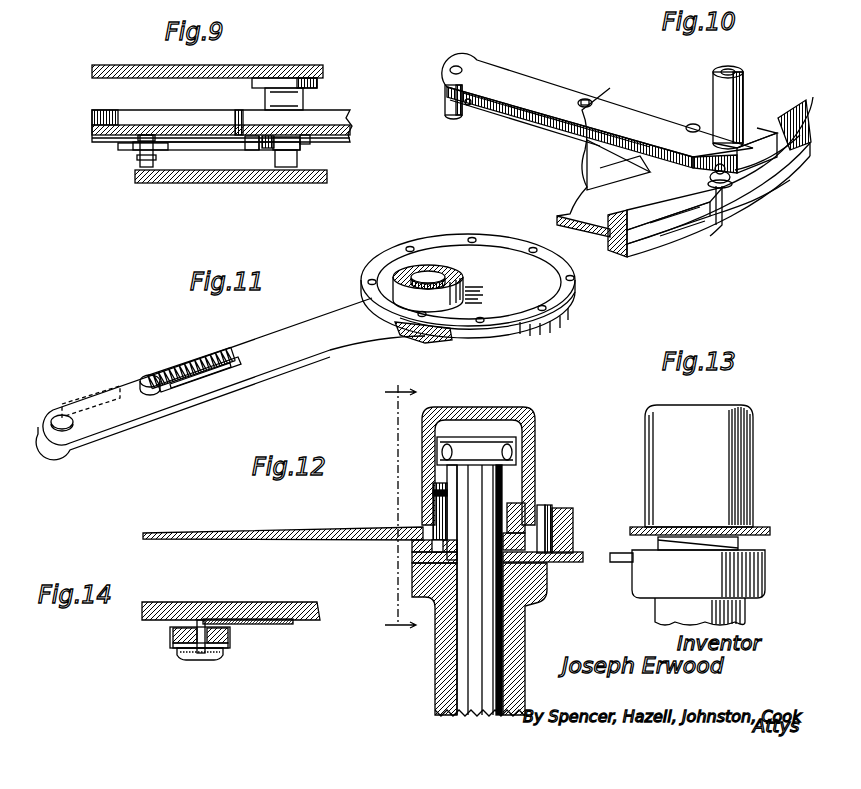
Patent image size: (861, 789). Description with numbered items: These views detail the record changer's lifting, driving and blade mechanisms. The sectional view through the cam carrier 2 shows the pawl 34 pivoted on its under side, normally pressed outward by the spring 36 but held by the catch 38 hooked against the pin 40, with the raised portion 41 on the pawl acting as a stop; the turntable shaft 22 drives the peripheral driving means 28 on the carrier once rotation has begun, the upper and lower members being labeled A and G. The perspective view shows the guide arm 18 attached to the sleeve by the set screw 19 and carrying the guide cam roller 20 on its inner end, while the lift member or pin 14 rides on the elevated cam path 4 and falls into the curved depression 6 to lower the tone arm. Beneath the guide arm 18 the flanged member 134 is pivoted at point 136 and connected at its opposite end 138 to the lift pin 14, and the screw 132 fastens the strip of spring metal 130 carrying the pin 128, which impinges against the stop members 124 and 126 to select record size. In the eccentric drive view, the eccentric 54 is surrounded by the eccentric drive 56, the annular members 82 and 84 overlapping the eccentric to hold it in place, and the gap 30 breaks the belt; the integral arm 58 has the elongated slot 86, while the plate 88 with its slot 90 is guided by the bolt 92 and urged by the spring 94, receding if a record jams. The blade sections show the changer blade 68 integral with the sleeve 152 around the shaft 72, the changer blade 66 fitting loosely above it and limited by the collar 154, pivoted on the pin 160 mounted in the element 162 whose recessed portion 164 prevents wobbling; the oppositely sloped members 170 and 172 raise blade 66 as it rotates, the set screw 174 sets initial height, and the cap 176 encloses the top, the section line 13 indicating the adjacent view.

In FIG. 9, the top plate A is at (293, 66).
In FIG. 14, the top plate A is at (193, 602).
In FIG. 9, the glass plate G is at (150, 183).
In FIG. 9, the cam carrier 2 is at (122, 123).
In FIG. 10, the cam carrier 2 is at (583, 162).
In FIG. 10, the cam path 4 is at (640, 213).
In FIG. 9, the curved depression 6 is at (237, 118).
In FIG. 10, the curved depression 6 is at (790, 117).
In FIG. 12, the section line 13 is at (389, 510).
In FIG. 10, the lift member or pin 14 is at (762, 193).
In FIG. 10, the guide arm 18 is at (575, 84).
In FIG. 14, the guide arm 18 is at (173, 640).
In FIG. 10, the set screw 19 is at (706, 178).
In FIG. 10, the guide cam roller 20 is at (445, 101).
In FIG. 9, the turntable shaft 22 is at (297, 158).
In FIG. 10, the peripheral driving means 28 is at (692, 240).
In FIG. 11, the gap 30 is at (447, 274).
In FIG. 9, the pawl 34 is at (210, 150).
In FIG. 9, the spring 36 is at (125, 149).
In FIG. 9, the catch 38 is at (270, 150).
In FIG. 9, the pin 40 is at (302, 141).
In FIG. 9, the raised portion 41 is at (258, 143).
In FIG. 11, the eccentric 54 is at (471, 280).
In FIG. 11, the eccentric drive 56 is at (578, 298).
In FIG. 11, the arm 58 is at (298, 321).
In FIG. 12, the changer blade 66 is at (330, 531).
In FIG. 13, the changer blade 66 is at (770, 527).
In FIG. 12, the changer blade 68 is at (560, 563).
In FIG. 12, the shaft 72 is at (508, 490).
In FIG. 11, the annular member 82 is at (576, 286).
In FIG. 11, the annular member 84 is at (566, 318).
In FIG. 11, the elongated slot 86 is at (65, 430).
In FIG. 11, the plate 88 is at (115, 393).
In FIG. 11, the slot 90 is at (193, 384).
In FIG. 11, the bolt 92 is at (150, 396).
In FIG. 11, the spring 94 is at (198, 360).
In FIG. 14, the stop member 124 is at (233, 603).
In FIG. 14, the stop member 126 is at (298, 600).
In FIG. 10, the pin 128 is at (582, 108).
In FIG. 14, the pin 128 is at (184, 650).
In FIG. 14, the strip of spring metal 130 is at (222, 656).
In FIG. 10, the screw 132 is at (693, 122).
In FIG. 10, the flanged member 134 is at (540, 118).
In FIG. 14, the flanged member 134 is at (231, 644).
In FIG. 10, the pivot point 136 is at (464, 118).
In FIG. 10, the opposite end 138 is at (714, 206).
In FIG. 10, the sleeve 152 is at (583, 162).
In FIG. 12, the sleeve 152 is at (525, 633).
In FIG. 13, the sleeve 152 is at (745, 608).
In FIG. 12, the collar 154 is at (513, 435).
In FIG. 12, the pin 160 is at (555, 508).
In FIG. 12, the element 162 is at (575, 518).
In FIG. 12, the recessed portion 164 is at (535, 507).
In FIG. 12, the sloped member 170 is at (412, 545).
In FIG. 13, the sloped member 170 is at (740, 541).
In FIG. 12, the sloped member 172 is at (412, 558).
In FIG. 13, the sloped member 172 is at (660, 545).
In FIG. 12, the set screw 174 is at (423, 494).
In FIG. 12, the cap 176 is at (498, 407).
In FIG. 13, the cap 176 is at (746, 405).